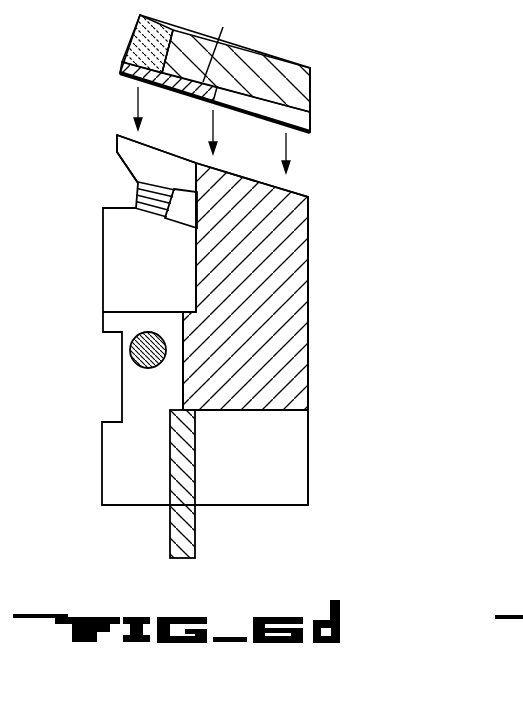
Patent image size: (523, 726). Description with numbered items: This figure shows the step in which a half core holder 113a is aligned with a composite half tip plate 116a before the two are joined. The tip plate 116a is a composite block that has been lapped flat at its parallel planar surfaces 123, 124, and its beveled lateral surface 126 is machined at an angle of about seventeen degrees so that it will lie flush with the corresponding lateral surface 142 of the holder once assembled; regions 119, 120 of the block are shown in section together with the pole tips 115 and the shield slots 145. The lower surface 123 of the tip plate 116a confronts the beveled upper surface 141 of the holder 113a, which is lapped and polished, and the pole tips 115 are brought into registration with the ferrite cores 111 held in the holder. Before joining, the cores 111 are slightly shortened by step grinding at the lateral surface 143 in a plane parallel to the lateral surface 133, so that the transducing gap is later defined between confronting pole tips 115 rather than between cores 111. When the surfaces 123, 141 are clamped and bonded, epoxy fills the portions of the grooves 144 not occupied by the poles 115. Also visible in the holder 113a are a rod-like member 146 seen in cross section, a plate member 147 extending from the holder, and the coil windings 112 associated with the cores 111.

The composite half tip plate 116a is at (341, 74).
The insert upper layer 119 is at (138, 35).
The insert body 120 is at (247, 53).
The pole tips 115 is at (132, 67).
The planar surface 124 is at (188, 29).
The shield slots 145 is at (221, 44).
The beveled lateral surface 126 is at (312, 96).
The lower planar surface 123 is at (305, 136).
The half core holder 113a is at (330, 274).
The beveled upper surface 141 is at (308, 195).
The lateral surface of holder 142 is at (310, 386).
The lateral surface of cores 143 is at (117, 145).
The spring 112 is at (138, 196).
The lateral surface 133 is at (103, 292).
The ferrite cores 111 is at (152, 266).
The grooves 144 is at (303, 120).
The pin 146 is at (147, 368).
The shank 147 is at (190, 455).